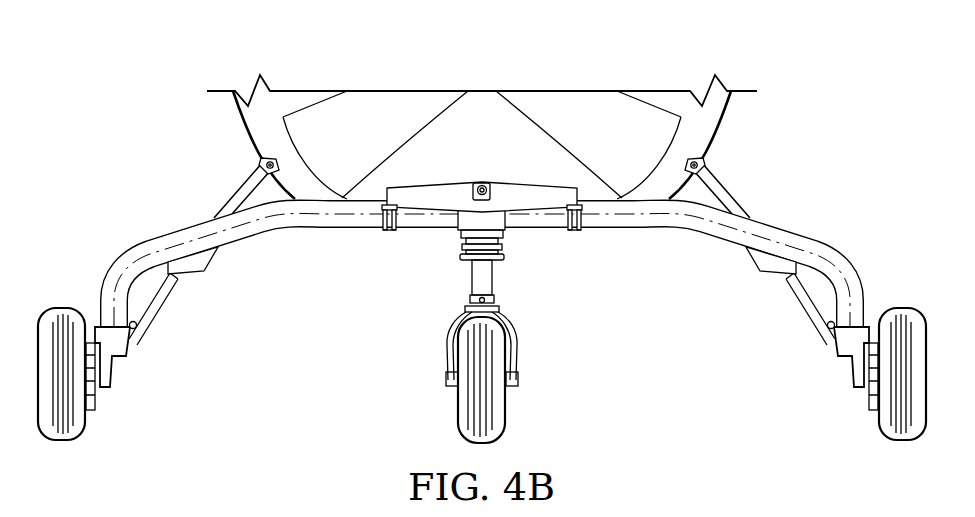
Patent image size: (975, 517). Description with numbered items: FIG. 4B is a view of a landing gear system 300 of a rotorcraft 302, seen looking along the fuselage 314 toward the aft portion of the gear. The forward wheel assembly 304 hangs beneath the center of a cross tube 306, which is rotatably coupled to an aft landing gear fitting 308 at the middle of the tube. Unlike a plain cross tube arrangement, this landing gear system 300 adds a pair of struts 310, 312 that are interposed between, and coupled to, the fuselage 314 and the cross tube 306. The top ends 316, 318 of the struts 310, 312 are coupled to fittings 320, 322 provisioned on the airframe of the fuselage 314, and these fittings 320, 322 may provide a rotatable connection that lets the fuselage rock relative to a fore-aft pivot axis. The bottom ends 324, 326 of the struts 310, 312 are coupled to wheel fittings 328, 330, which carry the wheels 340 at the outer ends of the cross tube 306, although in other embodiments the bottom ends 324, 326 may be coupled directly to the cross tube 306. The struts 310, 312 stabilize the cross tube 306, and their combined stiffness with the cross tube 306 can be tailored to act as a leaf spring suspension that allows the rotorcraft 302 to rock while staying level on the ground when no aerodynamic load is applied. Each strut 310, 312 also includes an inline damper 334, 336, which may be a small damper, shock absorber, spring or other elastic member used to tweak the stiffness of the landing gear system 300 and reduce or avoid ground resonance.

The landing gear system 300 is at (473, 327).
The rotorcraft 302 is at (440, 105).
The forward wheel assembly 304 is at (508, 401).
The cross tube 306 is at (608, 228).
The aft landing gear fitting 308 is at (428, 200).
The strut 310 is at (240, 196).
The strut 312 is at (724, 196).
The fuselage 314 is at (727, 113).
The top end 316 is at (263, 163).
The top end 318 is at (706, 163).
The fitting 320 is at (275, 158).
The fitting 322 is at (689, 158).
The bottom end 324 is at (164, 303).
The bottom end 326 is at (816, 320).
The wheel fitting 328 is at (124, 366).
The wheel fitting 330 is at (848, 377).
The inline damper 334 is at (200, 272).
The inline damper 336 is at (764, 270).
The wheel 340 is at (58, 441).